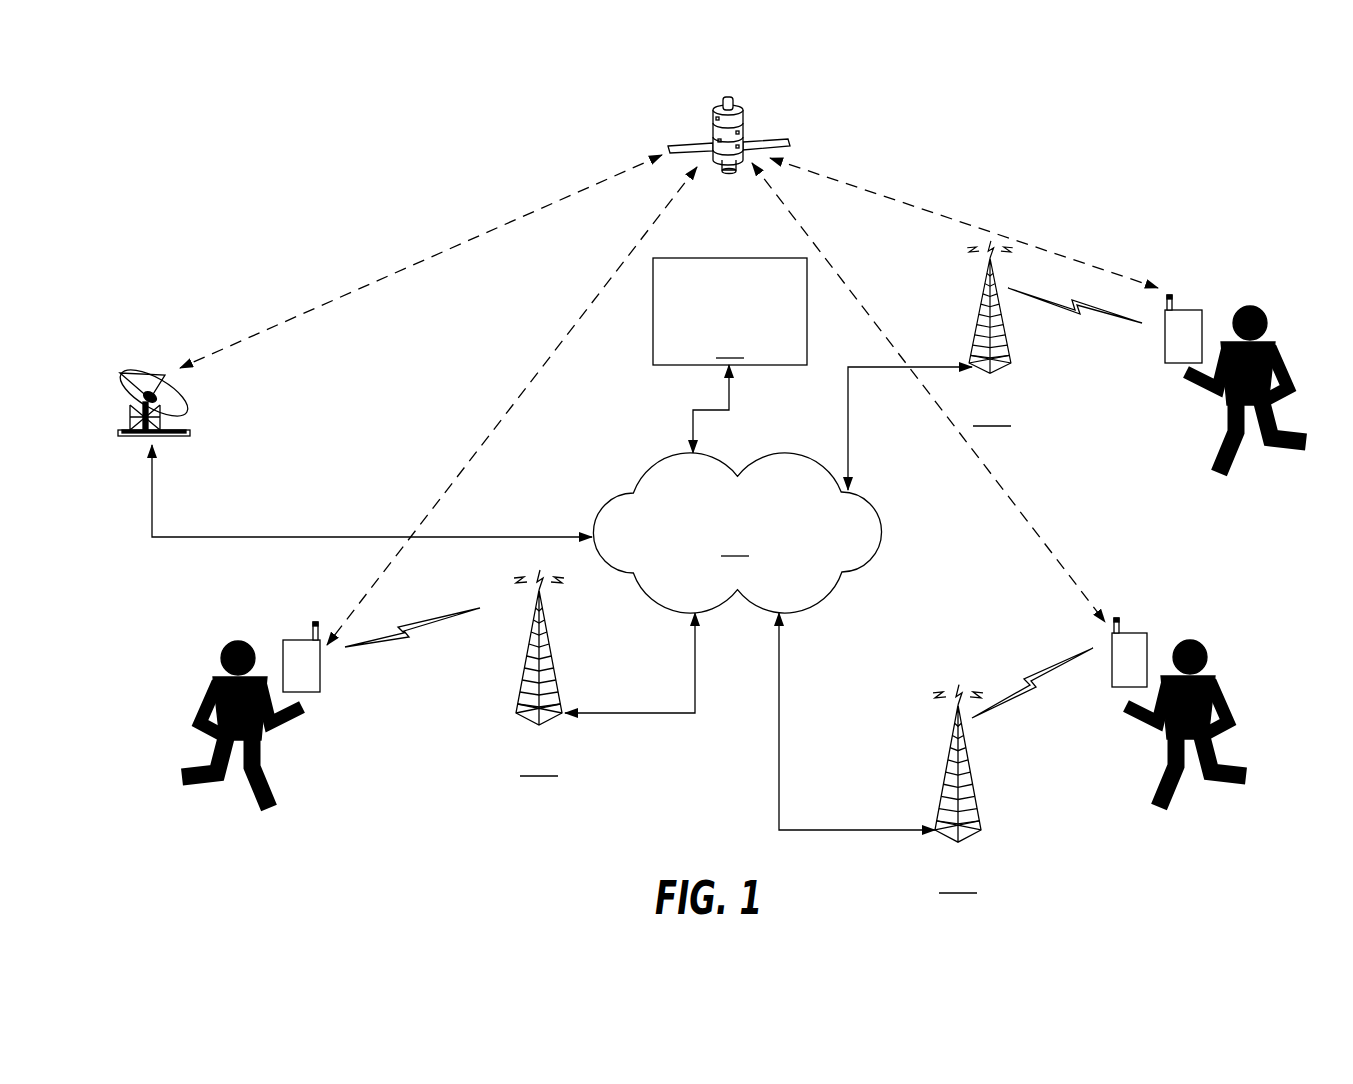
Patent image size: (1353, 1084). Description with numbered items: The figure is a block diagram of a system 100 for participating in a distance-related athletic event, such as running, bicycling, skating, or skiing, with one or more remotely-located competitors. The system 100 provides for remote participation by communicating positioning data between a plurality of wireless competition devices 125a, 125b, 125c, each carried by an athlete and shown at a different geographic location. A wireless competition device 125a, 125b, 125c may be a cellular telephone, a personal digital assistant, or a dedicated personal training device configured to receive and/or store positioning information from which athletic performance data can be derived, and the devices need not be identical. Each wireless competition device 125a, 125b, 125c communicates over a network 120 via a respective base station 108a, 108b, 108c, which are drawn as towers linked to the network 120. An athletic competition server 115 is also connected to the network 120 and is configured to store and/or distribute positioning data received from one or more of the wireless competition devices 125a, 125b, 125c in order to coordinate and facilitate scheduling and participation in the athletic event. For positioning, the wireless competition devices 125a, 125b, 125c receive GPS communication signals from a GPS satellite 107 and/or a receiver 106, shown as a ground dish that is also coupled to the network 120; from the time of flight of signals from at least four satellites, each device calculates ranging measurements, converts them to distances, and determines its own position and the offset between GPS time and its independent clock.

The system 100 is at (1060, 173).
The receiver 106 is at (188, 432).
The GPS satellite 107 is at (697, 143).
The base station 108a is at (539, 674).
The base station 108b is at (958, 790).
The base station 108c is at (992, 334).
The athletic competition server 115 is at (730, 311).
The network 120 is at (737, 533).
The wireless competition device 125a is at (298, 640).
The wireless competition device 125b is at (1133, 632).
The wireless competition device 125c is at (1183, 310).